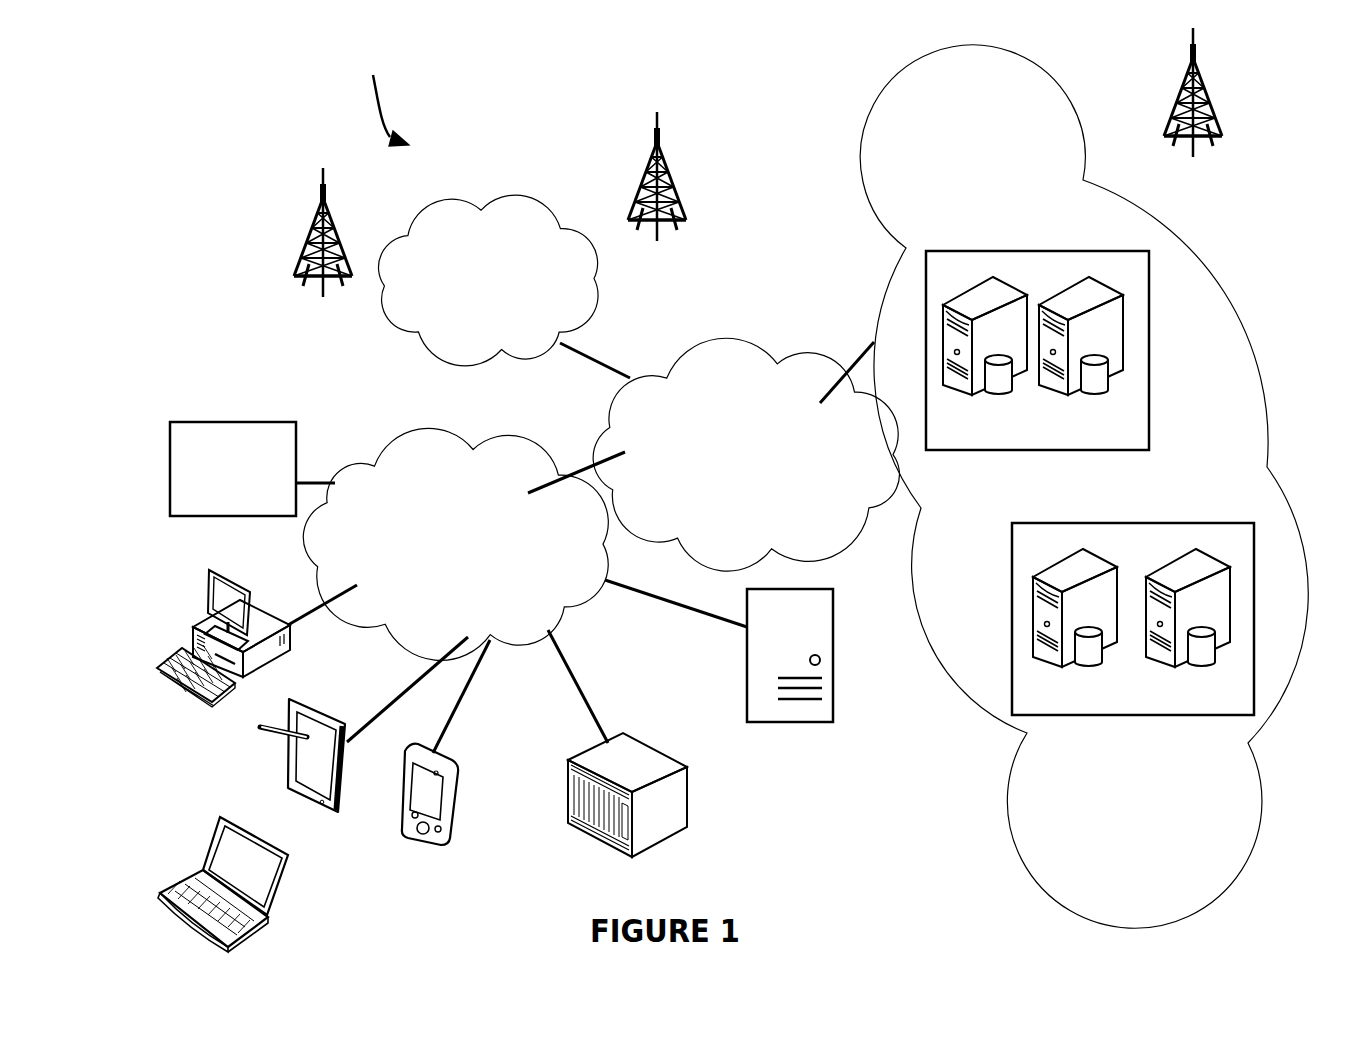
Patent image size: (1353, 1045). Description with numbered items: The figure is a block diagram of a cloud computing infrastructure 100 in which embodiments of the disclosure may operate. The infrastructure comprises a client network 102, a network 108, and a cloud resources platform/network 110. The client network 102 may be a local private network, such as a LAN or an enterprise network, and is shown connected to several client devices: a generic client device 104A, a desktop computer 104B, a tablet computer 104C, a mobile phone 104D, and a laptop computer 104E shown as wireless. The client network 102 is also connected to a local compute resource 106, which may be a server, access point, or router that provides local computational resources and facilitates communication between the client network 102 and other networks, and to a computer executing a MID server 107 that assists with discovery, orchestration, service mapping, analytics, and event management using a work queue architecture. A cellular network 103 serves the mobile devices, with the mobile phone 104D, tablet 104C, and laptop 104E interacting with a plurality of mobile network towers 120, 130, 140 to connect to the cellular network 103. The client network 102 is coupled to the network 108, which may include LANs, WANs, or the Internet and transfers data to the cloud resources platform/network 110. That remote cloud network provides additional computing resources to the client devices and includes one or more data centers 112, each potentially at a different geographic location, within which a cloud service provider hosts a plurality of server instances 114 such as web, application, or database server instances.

The cloud computing infrastructure 100 is at (373, 97).
The client network 102 is at (425, 455).
The cellular network 103 is at (513, 230).
The client device 104A is at (262, 422).
The desktop computer 104B is at (235, 580).
The tablet computer 104C is at (317, 702).
The mobile phone 104D is at (452, 763).
The laptop computer 104E is at (293, 863).
The local compute resource 106 is at (630, 738).
The MID server 107 is at (785, 722).
The network 108 is at (683, 358).
The cloud resources platform/network 110 is at (1192, 251).
The data center 112 is at (967, 251).
The server instance 114 is at (989, 393).
The mobile network tower 120 is at (657, 195).
The mobile network tower 130 is at (323, 250).
The mobile network tower 140 is at (1193, 110).